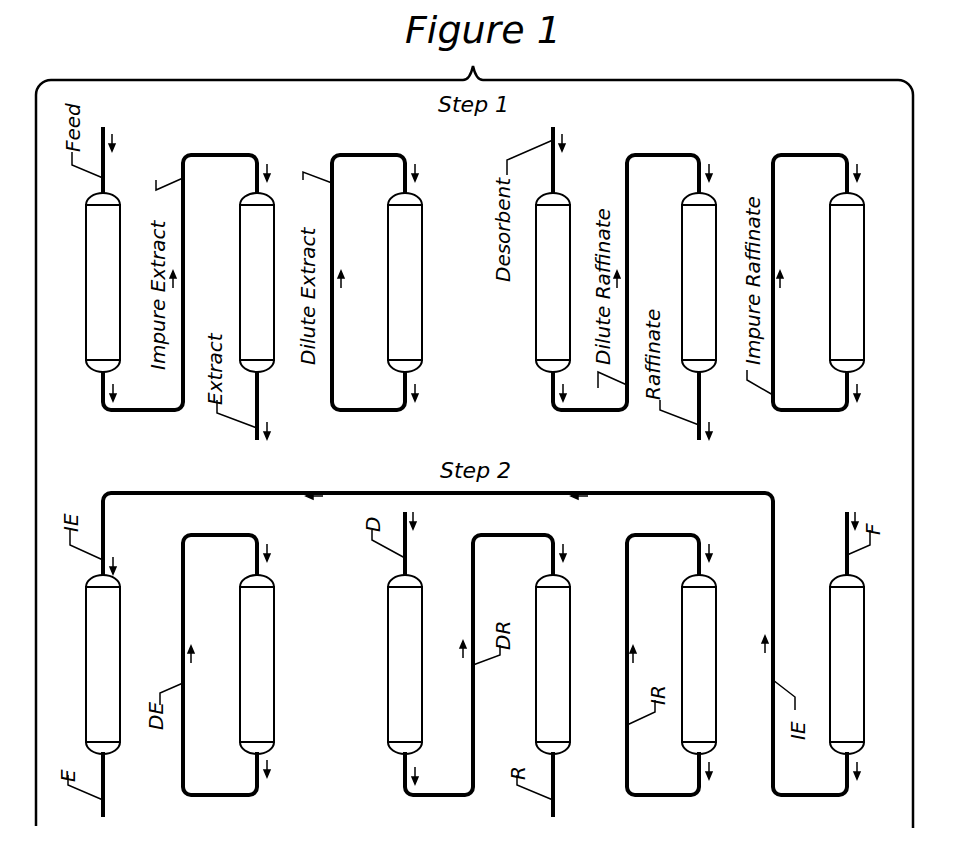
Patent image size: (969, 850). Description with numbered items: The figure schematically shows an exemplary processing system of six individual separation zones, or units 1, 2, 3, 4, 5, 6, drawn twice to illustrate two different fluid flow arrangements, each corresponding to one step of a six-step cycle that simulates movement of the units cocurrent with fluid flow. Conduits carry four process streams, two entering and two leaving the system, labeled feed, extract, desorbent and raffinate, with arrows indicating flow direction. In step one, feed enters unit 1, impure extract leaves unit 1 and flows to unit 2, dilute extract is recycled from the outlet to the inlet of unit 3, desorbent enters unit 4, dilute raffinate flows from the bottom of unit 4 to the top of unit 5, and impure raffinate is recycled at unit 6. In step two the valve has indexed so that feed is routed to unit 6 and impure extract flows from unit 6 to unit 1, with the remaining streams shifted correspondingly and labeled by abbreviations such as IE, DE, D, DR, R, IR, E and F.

The separation unit 1 is at (87, 240).
The separation unit 2 is at (240, 240).
The separation unit 3 is at (422, 240).
The separation unit 4 is at (537, 340).
The separation unit 5 is at (682, 240).
The separation unit 6 is at (864, 240).